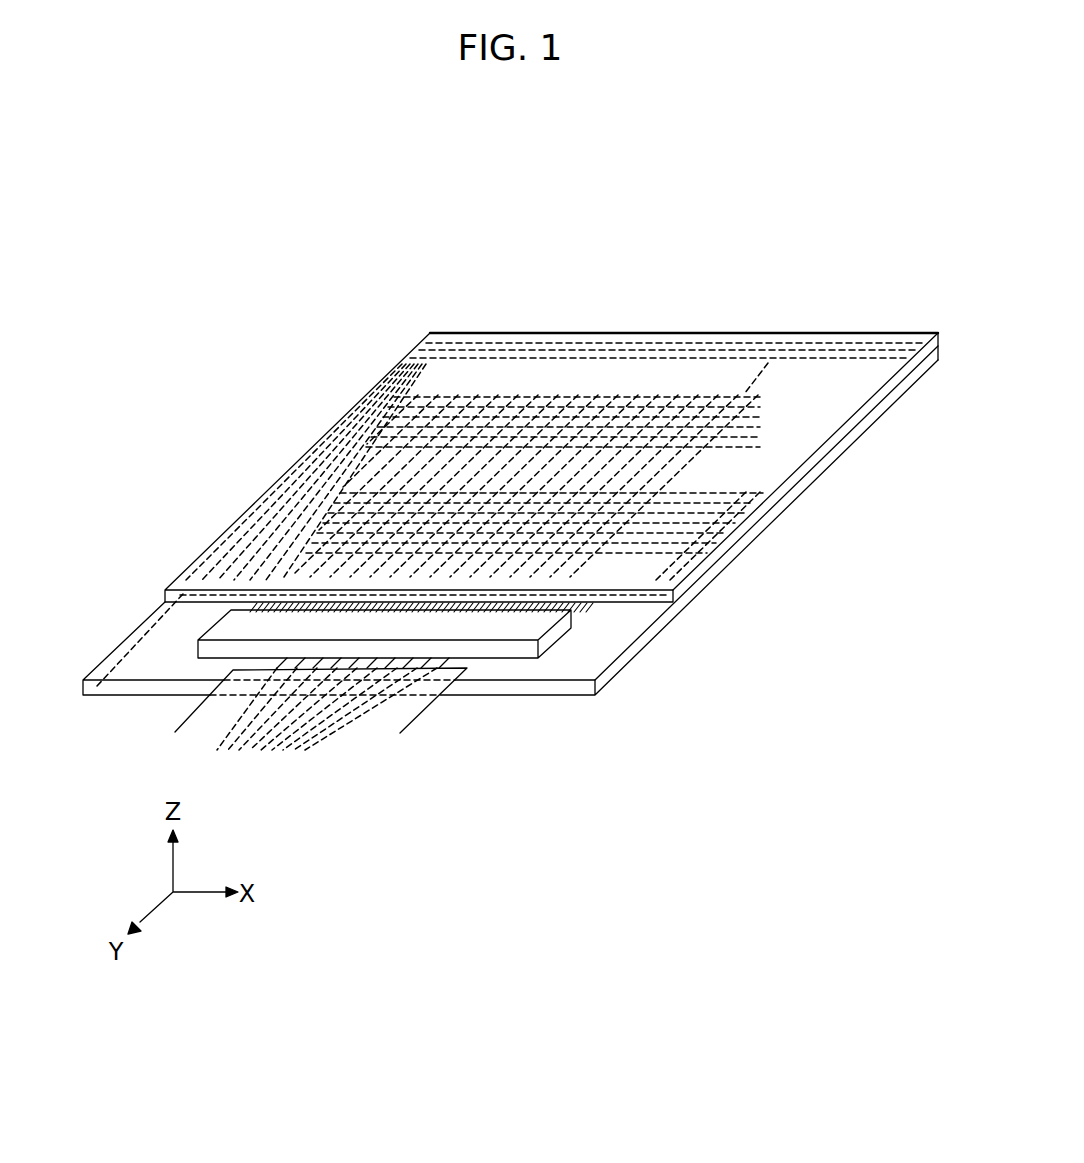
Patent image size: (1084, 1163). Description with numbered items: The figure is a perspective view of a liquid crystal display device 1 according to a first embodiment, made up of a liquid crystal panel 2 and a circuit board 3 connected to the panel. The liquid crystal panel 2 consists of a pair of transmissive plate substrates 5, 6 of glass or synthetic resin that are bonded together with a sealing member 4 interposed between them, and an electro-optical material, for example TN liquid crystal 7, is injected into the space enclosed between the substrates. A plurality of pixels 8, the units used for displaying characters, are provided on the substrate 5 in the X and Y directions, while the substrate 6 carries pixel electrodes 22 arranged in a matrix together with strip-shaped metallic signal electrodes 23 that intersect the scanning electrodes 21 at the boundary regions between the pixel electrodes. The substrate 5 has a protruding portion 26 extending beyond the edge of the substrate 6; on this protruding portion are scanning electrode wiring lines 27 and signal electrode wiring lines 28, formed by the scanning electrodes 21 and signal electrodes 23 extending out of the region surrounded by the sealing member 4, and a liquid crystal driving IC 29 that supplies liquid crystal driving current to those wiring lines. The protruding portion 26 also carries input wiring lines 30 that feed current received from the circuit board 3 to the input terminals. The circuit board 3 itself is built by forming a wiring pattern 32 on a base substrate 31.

The liquid crystal display device 1 is at (503, 202).
The liquid crystal panel 2 is at (656, 685).
The circuit board 3 is at (370, 780).
The sealing member 4 is at (590, 343).
The substrate 5 is at (767, 527).
The substrate 6 is at (733, 337).
The liquid crystal 7 is at (823, 390).
The pixels 8 is at (485, 397).
The scanning electrodes 21 is at (355, 422).
The pixel electrodes 22 is at (775, 355).
The signal electrodes 23 is at (812, 468).
The protruding portion 26 is at (138, 666).
The scanning electrode wiring lines 27 is at (573, 604).
The signal electrode wiring lines 28 is at (307, 596).
The liquid crystal driving IC 29 is at (490, 624).
The input wiring lines 30 is at (488, 668).
The base substrate 31 is at (175, 720).
The wiring pattern 32 is at (362, 714).